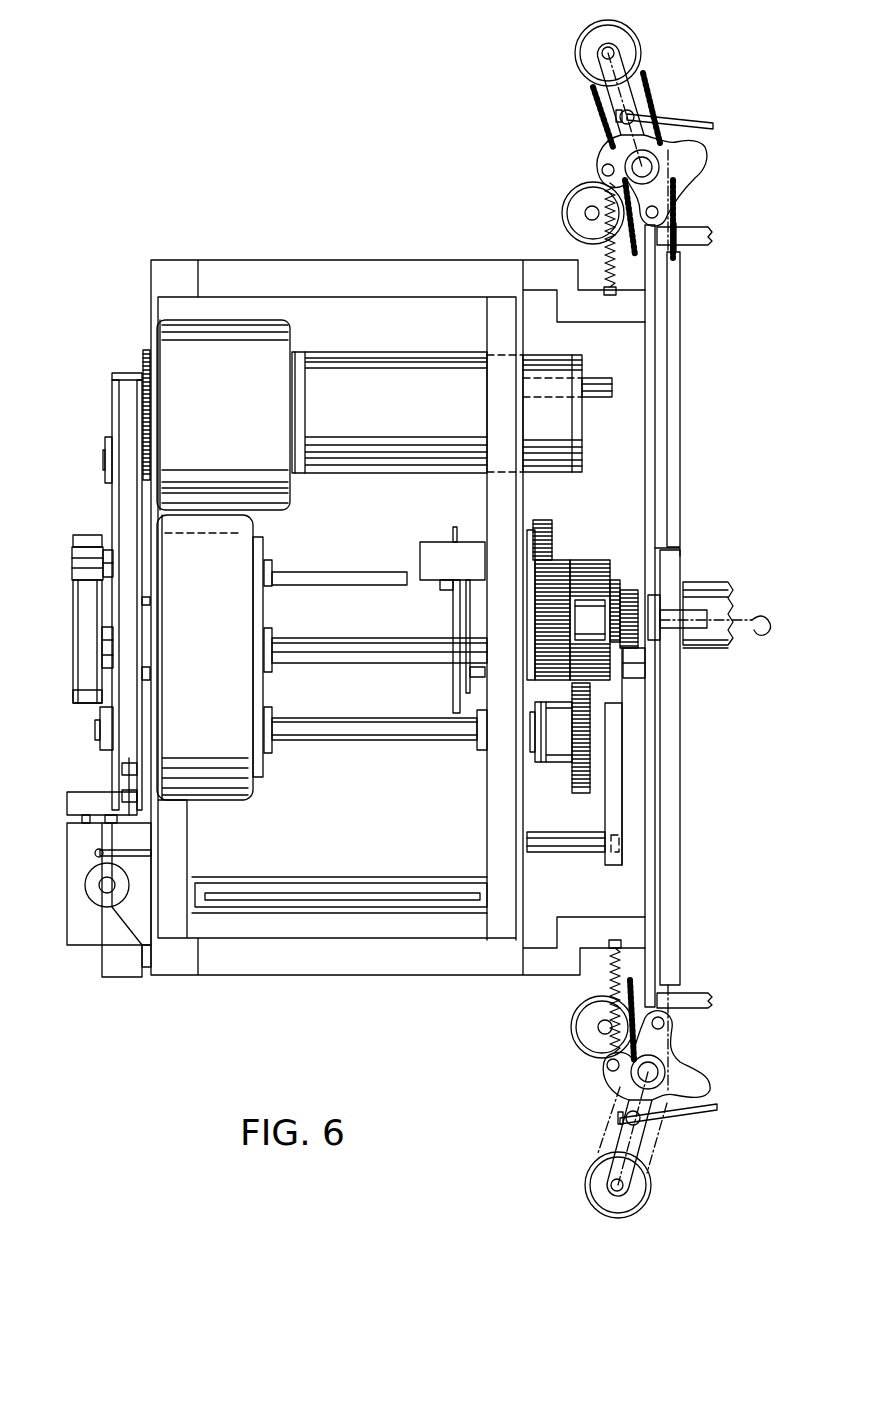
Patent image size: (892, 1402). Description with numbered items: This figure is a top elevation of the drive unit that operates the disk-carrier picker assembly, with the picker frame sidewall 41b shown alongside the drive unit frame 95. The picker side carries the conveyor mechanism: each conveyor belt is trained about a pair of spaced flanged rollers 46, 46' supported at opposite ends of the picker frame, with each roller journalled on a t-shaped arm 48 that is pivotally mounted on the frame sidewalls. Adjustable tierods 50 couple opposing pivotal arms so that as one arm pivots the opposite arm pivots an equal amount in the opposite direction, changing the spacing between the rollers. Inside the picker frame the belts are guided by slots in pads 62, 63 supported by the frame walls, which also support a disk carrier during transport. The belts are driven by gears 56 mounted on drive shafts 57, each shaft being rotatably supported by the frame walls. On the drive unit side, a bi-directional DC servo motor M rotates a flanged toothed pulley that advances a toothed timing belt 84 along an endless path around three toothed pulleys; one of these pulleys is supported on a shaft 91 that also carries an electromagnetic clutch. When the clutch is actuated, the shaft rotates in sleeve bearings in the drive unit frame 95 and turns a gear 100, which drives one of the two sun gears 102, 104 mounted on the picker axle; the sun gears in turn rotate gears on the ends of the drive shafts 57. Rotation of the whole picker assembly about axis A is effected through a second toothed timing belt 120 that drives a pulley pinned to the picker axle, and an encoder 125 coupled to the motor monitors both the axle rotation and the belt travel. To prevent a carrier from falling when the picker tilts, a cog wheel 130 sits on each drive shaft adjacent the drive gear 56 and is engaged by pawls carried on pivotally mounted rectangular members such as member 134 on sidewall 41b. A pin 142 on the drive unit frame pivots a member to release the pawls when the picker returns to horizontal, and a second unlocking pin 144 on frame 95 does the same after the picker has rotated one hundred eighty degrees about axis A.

The flanged roller 46' is at (566, 53).
The t-shaped arm 48 is at (612, 71).
The adjustable tierod 50 is at (691, 126).
The second unlocking pin 144 is at (601, 378).
The pad 62 is at (675, 414).
The frame sidewall 41b is at (645, 409).
The toothed timing belt 84 is at (118, 501).
The toothed timing belt 120 is at (85, 592).
The sun gear 102 is at (563, 555).
The sun gear 104 is at (582, 560).
The cog wheel 130 is at (613, 580).
The drive gear 56 is at (631, 592).
The drive shaft 57 is at (691, 614).
The axis A is at (766, 601).
The bi-directional DC servo motor M is at (218, 432).
The drive unit frame 95 is at (210, 602).
The encoder 125 is at (392, 414).
The shaft 91 is at (330, 729).
The gear 100 is at (574, 796).
The rectangular member 134 is at (606, 802).
The pin 142 is at (592, 845).
The pad 63 is at (672, 785).
The flanged roller 46 is at (586, 1178).